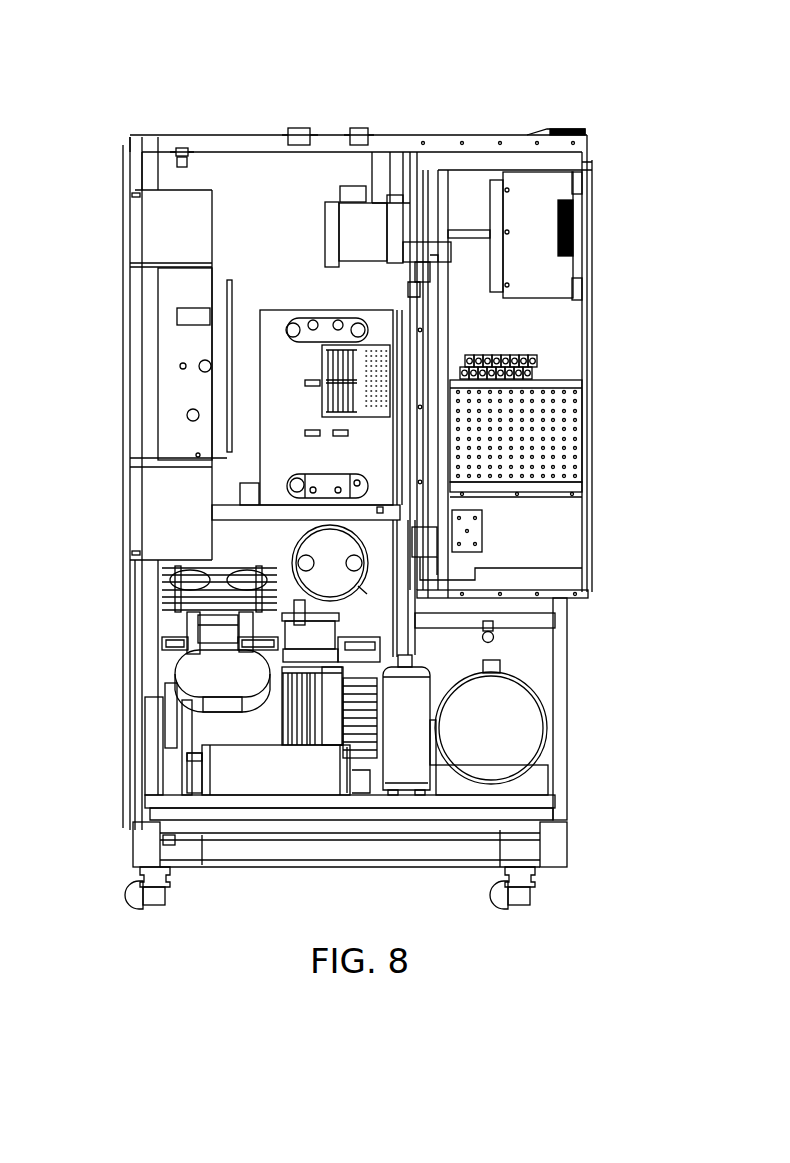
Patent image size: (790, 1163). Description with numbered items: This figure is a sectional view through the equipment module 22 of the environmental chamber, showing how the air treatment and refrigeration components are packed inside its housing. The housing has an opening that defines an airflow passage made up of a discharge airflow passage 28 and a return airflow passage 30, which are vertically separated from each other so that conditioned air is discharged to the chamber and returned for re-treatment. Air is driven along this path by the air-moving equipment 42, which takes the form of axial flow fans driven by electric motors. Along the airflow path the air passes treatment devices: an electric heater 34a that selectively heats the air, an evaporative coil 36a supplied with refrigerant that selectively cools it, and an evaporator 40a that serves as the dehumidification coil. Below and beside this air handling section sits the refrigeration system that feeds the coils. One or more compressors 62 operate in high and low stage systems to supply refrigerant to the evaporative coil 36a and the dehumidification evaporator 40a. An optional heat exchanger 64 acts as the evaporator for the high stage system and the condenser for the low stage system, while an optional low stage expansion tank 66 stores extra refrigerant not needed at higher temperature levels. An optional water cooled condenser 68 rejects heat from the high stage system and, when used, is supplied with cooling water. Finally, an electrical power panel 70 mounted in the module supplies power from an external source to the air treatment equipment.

The equipment module 22 is at (468, 69).
The discharge airflow passage 28 is at (582, 232).
The return airflow passage 30 is at (592, 525).
The electric heater 34a is at (538, 363).
The evaporative coil 36a is at (553, 433).
The evaporator 40a is at (480, 525).
The air-moving equipment 42 is at (325, 210).
The compressor 62 is at (192, 703).
The heat exchanger 64 is at (327, 330).
The low stage expansion tank 66 is at (537, 739).
The water cooled condenser 68 is at (365, 590).
The electrical power panel 70 is at (157, 410).